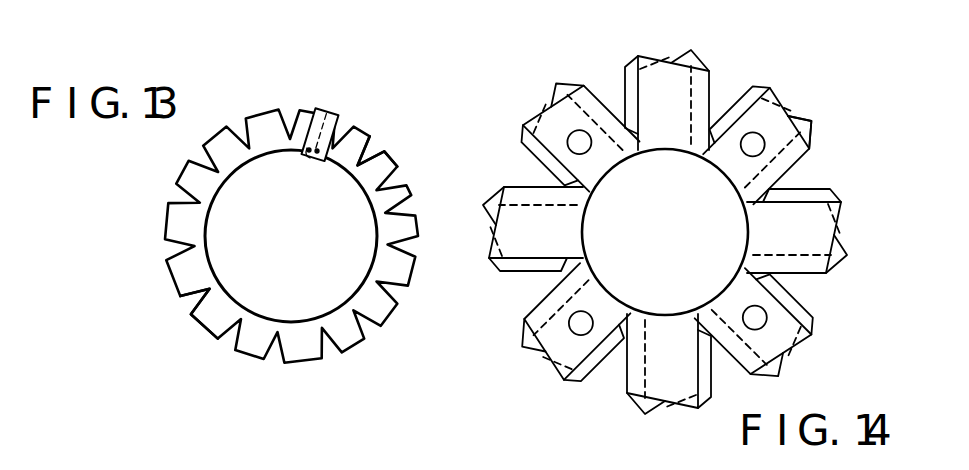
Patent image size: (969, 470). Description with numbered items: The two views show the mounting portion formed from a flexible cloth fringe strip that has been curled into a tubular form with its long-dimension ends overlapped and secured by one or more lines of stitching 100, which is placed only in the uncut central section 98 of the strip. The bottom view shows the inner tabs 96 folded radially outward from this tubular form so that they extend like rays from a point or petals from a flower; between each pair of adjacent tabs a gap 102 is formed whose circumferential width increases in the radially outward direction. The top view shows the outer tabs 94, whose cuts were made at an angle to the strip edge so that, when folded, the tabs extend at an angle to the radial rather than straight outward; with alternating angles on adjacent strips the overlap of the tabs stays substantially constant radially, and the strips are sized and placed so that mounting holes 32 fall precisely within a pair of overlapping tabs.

In FIG. 13, the inner tabs 96 is at (308, 340).
In FIG. 13, the central section 98 is at (368, 203).
In FIG. 13, the stitching 100 is at (315, 150).
In FIG. 13, the gap 102 is at (377, 143).
In FIG. 14, the mounting holes 32 is at (763, 328).
In FIG. 14, the outer tabs 94 is at (814, 142).